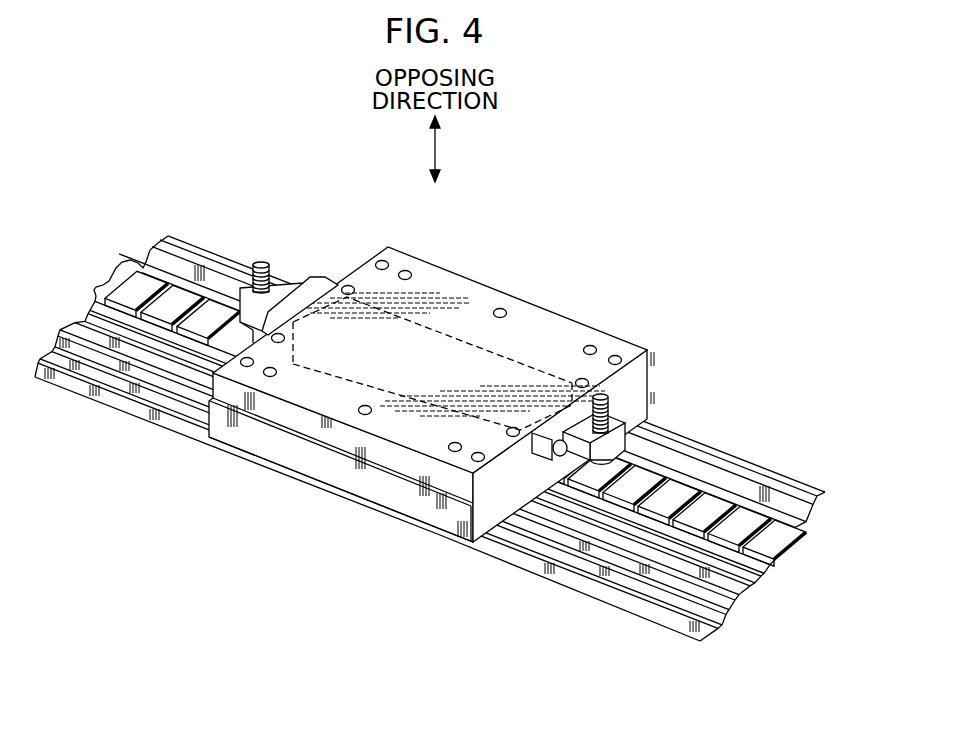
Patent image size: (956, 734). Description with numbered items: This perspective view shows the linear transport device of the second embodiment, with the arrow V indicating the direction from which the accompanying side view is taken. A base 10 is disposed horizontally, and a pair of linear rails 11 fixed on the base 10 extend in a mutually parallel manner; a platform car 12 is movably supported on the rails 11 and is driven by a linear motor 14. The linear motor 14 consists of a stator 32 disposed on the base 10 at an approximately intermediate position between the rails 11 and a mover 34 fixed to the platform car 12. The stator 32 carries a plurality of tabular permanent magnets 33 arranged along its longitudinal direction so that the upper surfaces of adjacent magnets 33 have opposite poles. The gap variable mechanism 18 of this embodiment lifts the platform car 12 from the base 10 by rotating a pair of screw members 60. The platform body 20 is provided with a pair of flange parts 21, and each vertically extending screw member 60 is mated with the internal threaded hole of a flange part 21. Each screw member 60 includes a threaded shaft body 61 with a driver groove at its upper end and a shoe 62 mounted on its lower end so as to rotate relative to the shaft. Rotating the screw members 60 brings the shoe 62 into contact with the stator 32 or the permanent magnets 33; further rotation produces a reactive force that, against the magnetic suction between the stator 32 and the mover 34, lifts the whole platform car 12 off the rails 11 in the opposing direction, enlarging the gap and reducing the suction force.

The base 10 is at (632, 605).
The linear rails 11 is at (573, 547).
The platform car 12 is at (447, 292).
The linear motor 14 is at (553, 495).
The gap variable mechanism 18 is at (431, 330).
The platform body 20 is at (541, 325).
The flange parts 21 is at (276, 292).
The stator 32 is at (381, 533).
The permanent magnets 33 is at (163, 310).
The mover 34 is at (530, 363).
The screw members 60 is at (431, 330).
The threaded shaft body 61 is at (245, 272).
The shoe 62 is at (621, 460).
The V direction V is at (430, 379).